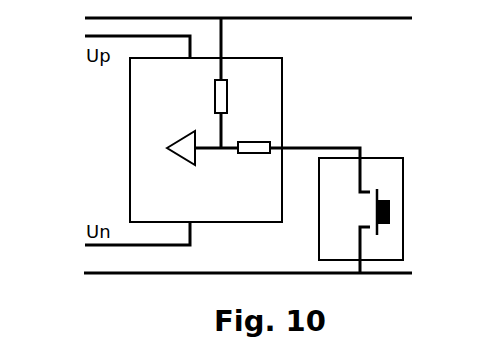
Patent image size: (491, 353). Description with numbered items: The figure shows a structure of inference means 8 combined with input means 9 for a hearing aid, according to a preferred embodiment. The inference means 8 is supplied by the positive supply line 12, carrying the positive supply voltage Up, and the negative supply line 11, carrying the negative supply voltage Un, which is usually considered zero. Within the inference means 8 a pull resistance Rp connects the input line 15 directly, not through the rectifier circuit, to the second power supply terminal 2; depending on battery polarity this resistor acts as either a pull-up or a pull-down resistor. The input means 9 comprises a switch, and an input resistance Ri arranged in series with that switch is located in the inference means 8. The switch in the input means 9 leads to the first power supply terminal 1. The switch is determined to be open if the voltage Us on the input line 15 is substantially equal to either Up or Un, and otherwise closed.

The first power supply terminal 1 is at (412, 274).
The second power supply terminal 2 is at (412, 19).
The inference means 8 is at (206, 120).
The input means 9 is at (361, 215).
The negative supply line 11 is at (80, 245).
The positive supply line 12 is at (80, 37).
The input line 15 is at (350, 147).